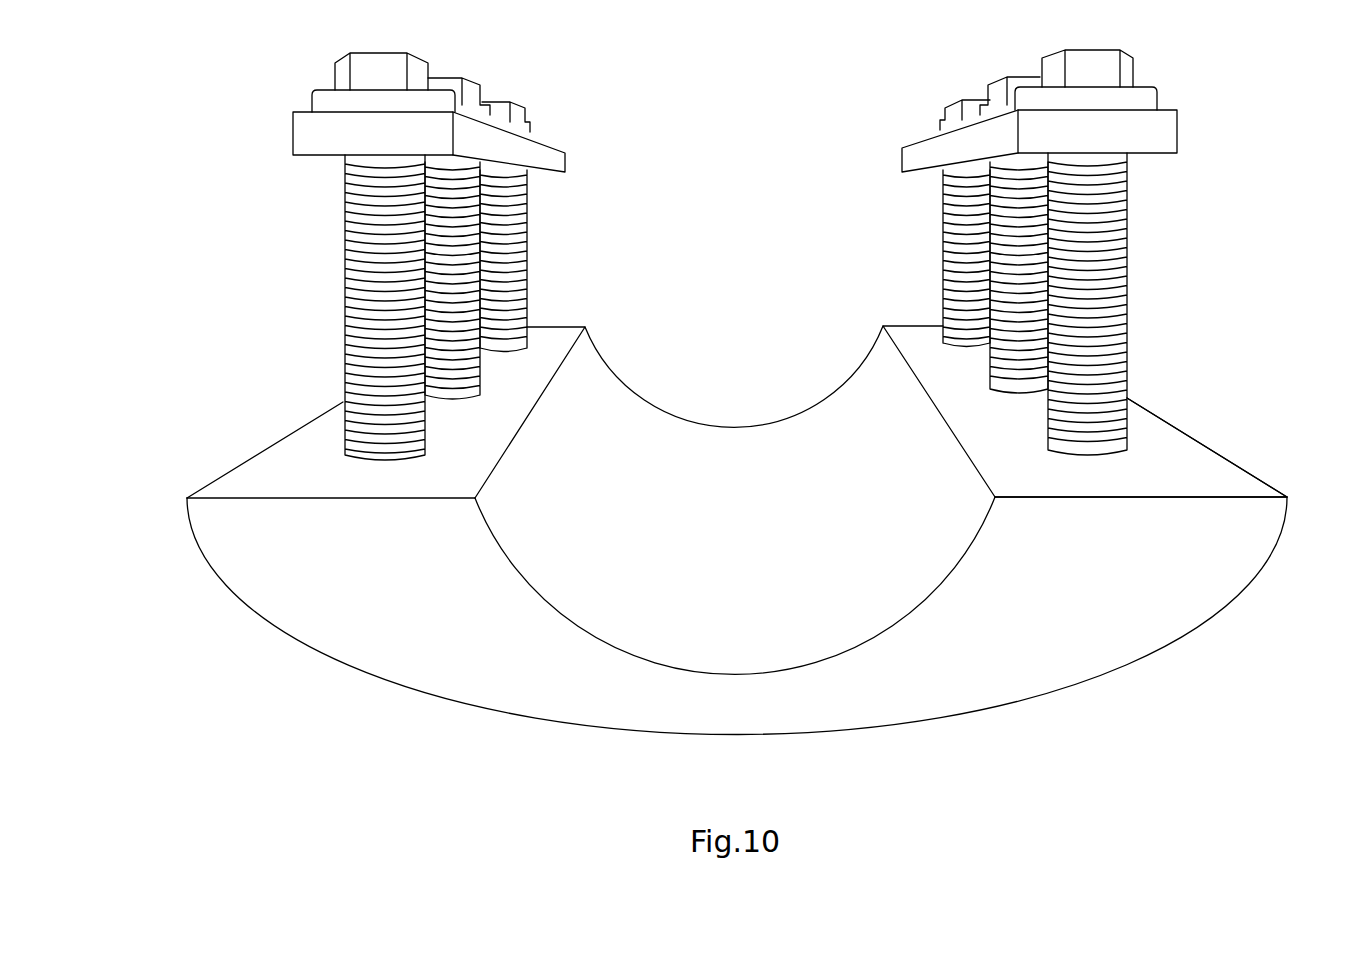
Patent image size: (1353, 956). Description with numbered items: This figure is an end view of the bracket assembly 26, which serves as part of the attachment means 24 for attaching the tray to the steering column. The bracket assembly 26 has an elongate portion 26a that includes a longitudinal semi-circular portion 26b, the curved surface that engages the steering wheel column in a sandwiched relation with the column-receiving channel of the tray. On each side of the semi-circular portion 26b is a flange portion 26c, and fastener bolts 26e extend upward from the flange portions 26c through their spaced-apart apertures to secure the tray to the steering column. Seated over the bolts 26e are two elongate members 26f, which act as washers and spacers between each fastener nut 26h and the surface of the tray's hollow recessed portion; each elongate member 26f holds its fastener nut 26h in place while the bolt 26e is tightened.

The attachment means 24 is at (746, 395).
The bracket assembly 26 is at (723, 528).
The elongate portion 26a is at (1195, 485).
The longitudinal semi-circular portion 26b is at (740, 567).
The flange portion 26c is at (280, 475).
The fastener bolt 26e is at (507, 248).
The elongate member 26f is at (553, 158).
The fastener nut 26h is at (1088, 73).